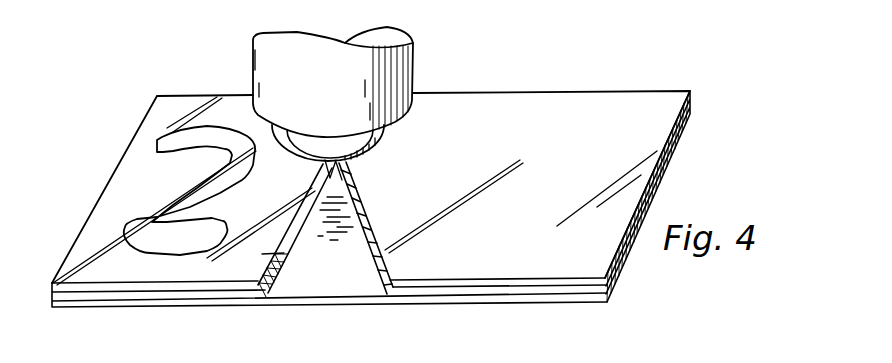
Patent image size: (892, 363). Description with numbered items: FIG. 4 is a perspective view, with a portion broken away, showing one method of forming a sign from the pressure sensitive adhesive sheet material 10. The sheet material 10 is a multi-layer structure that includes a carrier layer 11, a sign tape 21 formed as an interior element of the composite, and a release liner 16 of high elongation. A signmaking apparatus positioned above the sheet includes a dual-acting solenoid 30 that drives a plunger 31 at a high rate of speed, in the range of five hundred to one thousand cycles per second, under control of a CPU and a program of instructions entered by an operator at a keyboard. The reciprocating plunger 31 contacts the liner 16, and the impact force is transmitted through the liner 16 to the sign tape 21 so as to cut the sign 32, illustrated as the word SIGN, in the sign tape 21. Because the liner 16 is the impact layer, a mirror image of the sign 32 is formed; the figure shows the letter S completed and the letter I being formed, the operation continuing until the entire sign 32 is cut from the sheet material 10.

The pressure sensitive adhesive sheet material 10 is at (698, 108).
The carrier layer 11 is at (564, 302).
The release liner 16 is at (572, 95).
The sign tape 21 is at (266, 302).
The dual-acting solenoid 30 is at (380, 63).
The plunger 31 is at (335, 186).
The sign 32 is at (179, 146).